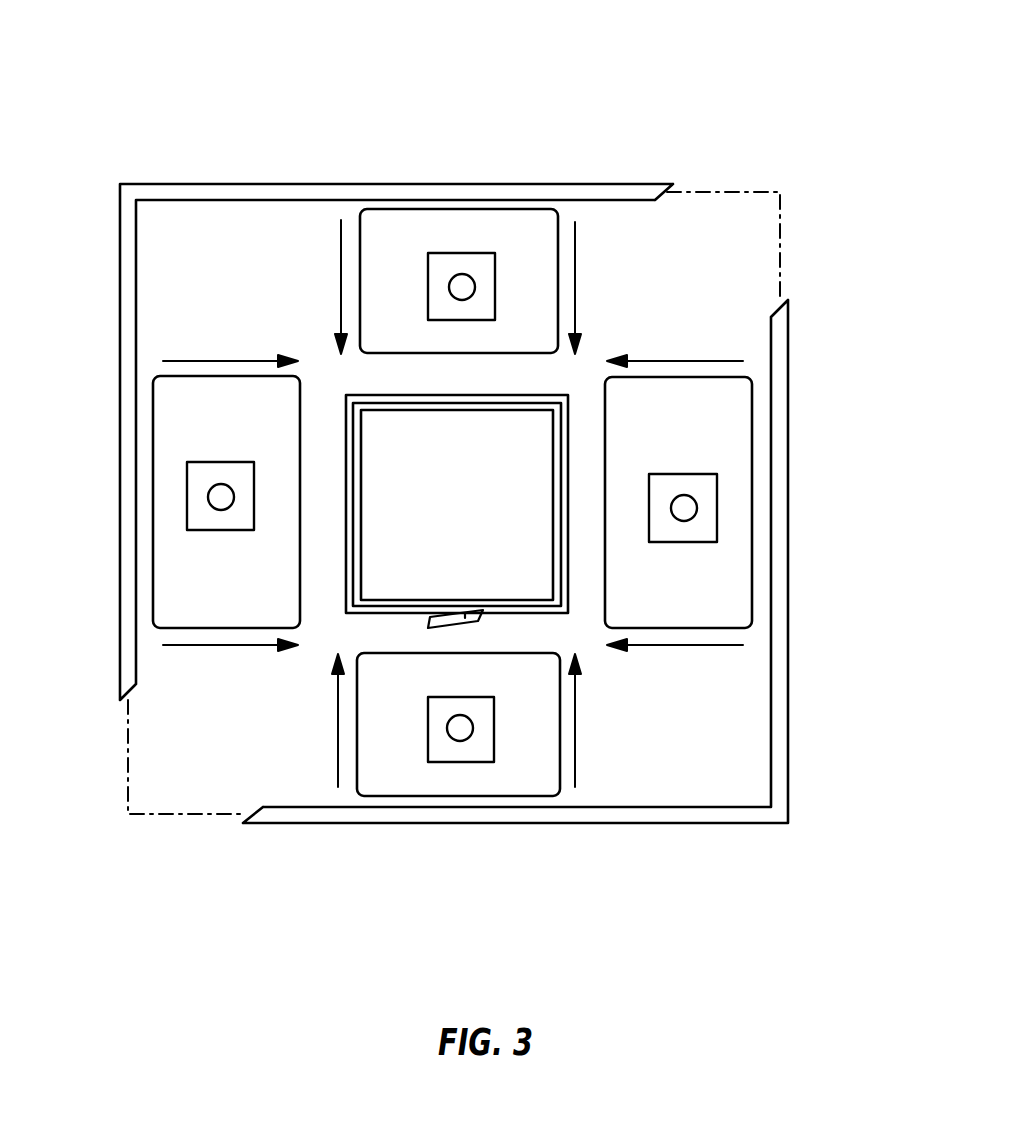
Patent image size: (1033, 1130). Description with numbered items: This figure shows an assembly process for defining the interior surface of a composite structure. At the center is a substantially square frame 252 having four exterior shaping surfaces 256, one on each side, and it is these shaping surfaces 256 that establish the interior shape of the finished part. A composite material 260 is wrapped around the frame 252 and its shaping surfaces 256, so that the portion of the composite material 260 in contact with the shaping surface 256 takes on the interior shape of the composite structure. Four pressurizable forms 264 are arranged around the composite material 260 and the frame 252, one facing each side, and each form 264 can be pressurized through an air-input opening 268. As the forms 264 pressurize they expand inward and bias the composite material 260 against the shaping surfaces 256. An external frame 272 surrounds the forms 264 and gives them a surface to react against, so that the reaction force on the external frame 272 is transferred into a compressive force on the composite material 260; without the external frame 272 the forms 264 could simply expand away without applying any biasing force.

The frame 252 is at (552, 552).
The exterior shaping surface 256 is at (420, 397).
The composite material 260 is at (346, 596).
The pressurizable form 264 is at (538, 232).
The air-input opening 268 is at (462, 287).
The external frame 272 is at (789, 767).